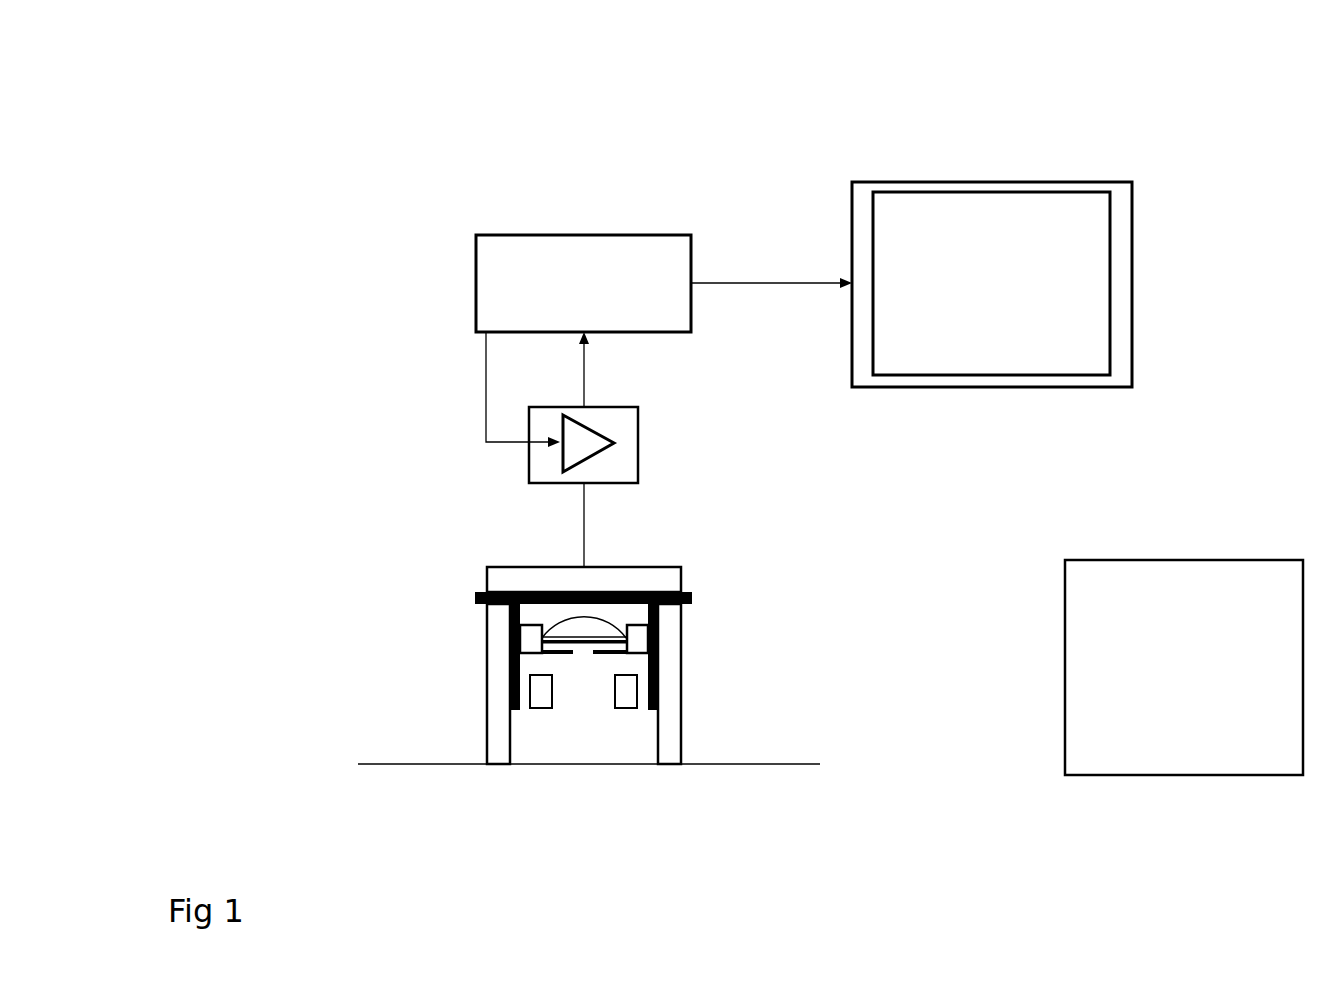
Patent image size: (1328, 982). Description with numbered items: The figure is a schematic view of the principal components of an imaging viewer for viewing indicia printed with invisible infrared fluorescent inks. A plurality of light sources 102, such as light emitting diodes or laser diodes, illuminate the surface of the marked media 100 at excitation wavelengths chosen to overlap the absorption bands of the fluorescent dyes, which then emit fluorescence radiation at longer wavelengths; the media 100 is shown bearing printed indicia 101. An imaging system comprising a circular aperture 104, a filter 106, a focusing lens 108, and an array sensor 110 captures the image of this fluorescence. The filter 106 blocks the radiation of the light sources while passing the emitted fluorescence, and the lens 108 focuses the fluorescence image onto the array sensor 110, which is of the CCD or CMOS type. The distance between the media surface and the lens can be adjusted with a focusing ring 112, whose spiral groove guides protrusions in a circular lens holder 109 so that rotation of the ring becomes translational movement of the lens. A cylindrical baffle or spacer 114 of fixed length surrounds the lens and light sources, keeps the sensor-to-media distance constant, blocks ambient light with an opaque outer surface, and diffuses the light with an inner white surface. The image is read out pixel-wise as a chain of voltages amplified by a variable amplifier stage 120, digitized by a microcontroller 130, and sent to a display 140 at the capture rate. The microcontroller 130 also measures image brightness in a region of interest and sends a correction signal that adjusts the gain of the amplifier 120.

The marked media 100 is at (368, 765).
The visible feature (character) on object 101 is at (1130, 625).
The light sources 102 is at (532, 693).
The circular aperture 104 is at (562, 655).
The filter 106 is at (602, 650).
The focusing lens 108 is at (583, 626).
The circular lens holder 109 is at (530, 648).
The array sensor 110 is at (682, 578).
The focusing ring 112 is at (692, 598).
The cylindrical baffle or spacer 114 is at (498, 733).
The variable amplifier stage 120 is at (638, 443).
The microcontroller 130 is at (476, 280).
The display 140 is at (988, 182).